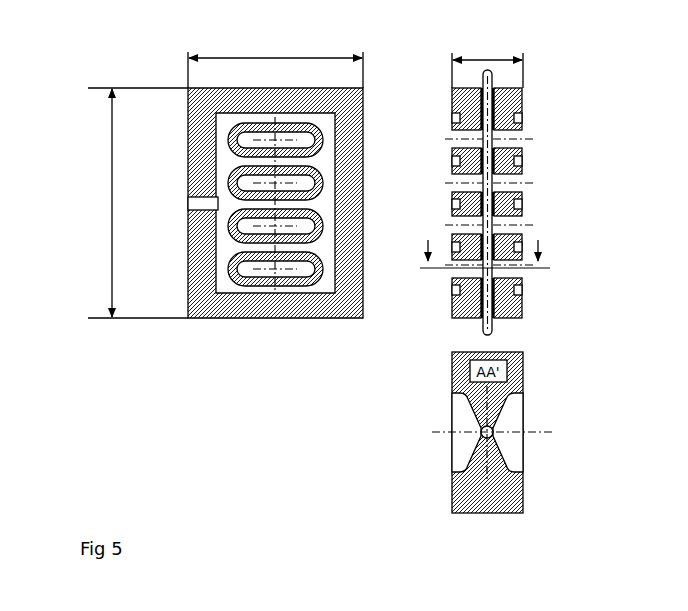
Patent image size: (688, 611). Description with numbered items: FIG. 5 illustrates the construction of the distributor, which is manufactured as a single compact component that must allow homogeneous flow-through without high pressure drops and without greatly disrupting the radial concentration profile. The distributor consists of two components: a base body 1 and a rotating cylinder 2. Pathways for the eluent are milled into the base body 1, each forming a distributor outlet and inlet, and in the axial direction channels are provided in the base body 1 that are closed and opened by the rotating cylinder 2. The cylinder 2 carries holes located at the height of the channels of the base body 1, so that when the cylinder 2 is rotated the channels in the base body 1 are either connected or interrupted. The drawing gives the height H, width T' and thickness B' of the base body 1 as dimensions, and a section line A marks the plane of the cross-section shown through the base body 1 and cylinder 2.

The base body 1 is at (343, 317).
The rotating cylinder 2 is at (494, 325).
The height dimension H is at (137, 203).
The width dimension T' is at (275, 62).
The thickness dimension B' is at (487, 63).
The section line A-A' A is at (489, 254).